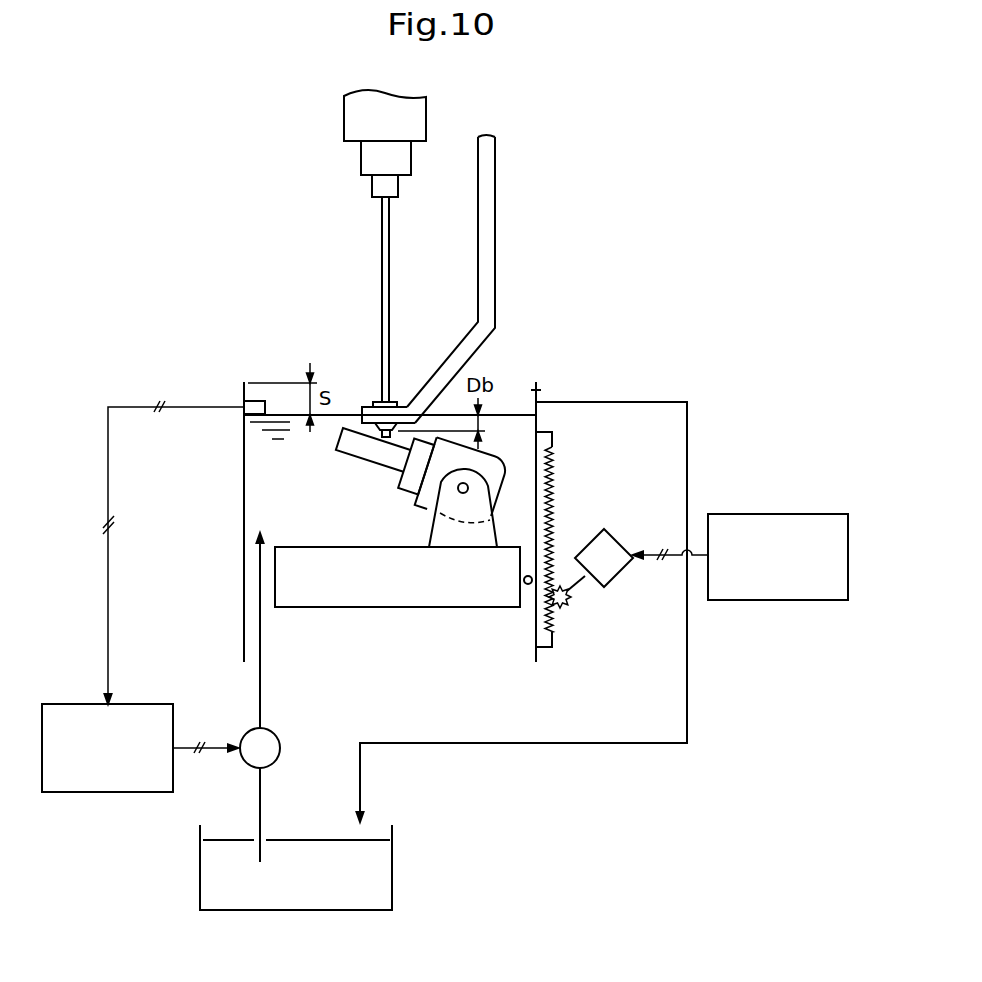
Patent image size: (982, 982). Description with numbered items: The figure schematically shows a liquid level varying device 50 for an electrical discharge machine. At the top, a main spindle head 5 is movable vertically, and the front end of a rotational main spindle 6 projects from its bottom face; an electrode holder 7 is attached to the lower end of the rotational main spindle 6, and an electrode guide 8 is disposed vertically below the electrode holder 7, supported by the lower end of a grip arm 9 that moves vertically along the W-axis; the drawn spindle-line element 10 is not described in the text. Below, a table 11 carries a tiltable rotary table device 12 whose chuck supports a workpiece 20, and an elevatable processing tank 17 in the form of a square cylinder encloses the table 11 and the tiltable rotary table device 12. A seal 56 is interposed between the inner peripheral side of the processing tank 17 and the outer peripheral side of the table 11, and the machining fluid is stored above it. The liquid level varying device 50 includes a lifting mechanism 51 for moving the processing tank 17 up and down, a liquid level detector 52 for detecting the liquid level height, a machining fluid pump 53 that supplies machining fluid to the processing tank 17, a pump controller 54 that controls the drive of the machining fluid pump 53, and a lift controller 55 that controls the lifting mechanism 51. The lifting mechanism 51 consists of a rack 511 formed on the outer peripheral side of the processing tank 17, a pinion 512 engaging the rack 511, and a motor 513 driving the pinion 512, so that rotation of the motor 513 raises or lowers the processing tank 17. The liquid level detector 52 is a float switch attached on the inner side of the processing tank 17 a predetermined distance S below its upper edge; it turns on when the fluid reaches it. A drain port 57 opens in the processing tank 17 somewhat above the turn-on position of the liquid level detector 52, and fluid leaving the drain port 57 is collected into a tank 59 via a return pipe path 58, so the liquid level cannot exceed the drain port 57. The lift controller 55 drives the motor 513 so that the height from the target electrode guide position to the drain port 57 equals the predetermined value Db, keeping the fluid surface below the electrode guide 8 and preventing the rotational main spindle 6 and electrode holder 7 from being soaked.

The main spindle head 5 is at (344, 101).
The rotational main spindle 6 is at (361, 160).
The electrode holder 7 is at (372, 188).
The electrode guide 8 is at (392, 403).
The grip arm 9 is at (495, 240).
The spindle shaft 10 is at (382, 249).
The table 11 is at (437, 607).
The tiltable rotary table device 12 is at (498, 442).
The processing tank 17 is at (244, 493).
The workpiece 20 is at (368, 465).
The liquid level varying device 50 is at (655, 330).
The lifting mechanism 51 is at (580, 505).
The liquid level detector 52 is at (256, 401).
The machining fluid pump 53 is at (277, 735).
The pump controller 54 is at (93, 792).
The lift controller 55 is at (760, 600).
The seal 56 is at (527, 585).
The drain port 57 is at (538, 390).
The return pipe path 58 is at (687, 468).
The tank 59 is at (395, 832).
The rack 511 is at (549, 447).
The pinion 512 is at (566, 606).
The motor 513 is at (613, 577).